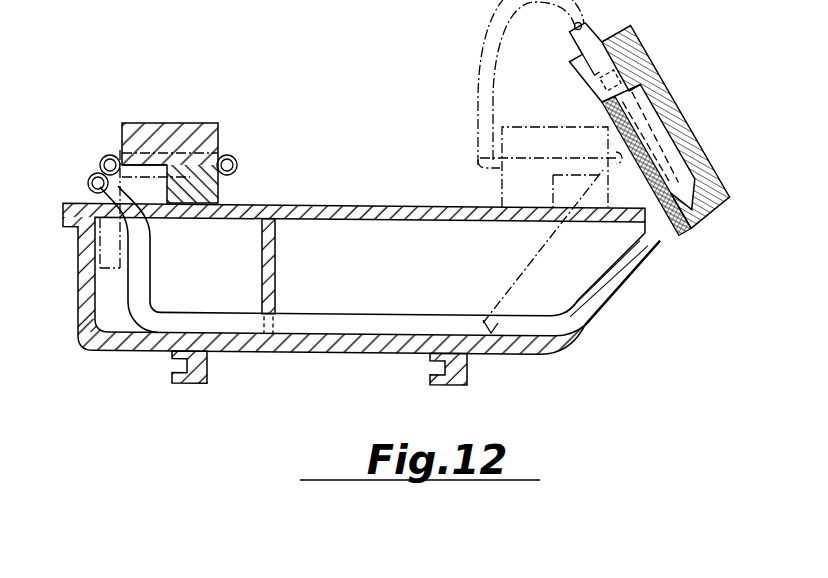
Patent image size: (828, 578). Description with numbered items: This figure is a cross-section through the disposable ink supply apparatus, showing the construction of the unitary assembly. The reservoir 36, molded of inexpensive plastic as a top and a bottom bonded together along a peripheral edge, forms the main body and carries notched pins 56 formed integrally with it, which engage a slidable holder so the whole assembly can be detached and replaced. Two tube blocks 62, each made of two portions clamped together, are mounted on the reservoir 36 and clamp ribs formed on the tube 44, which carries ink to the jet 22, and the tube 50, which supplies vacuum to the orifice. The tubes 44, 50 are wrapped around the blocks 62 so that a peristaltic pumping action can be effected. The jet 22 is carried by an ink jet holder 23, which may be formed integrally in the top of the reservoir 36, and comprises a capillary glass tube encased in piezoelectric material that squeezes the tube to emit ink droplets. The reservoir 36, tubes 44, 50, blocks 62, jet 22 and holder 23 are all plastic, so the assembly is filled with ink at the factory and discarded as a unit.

The jet 22 is at (648, 136).
The ink jet holder 23 is at (693, 157).
The reservoir 36 is at (372, 268).
The tube 44 is at (487, 48).
The tube 50 is at (238, 160).
The pins 56 is at (200, 386).
The tube blocks 62 is at (185, 135).